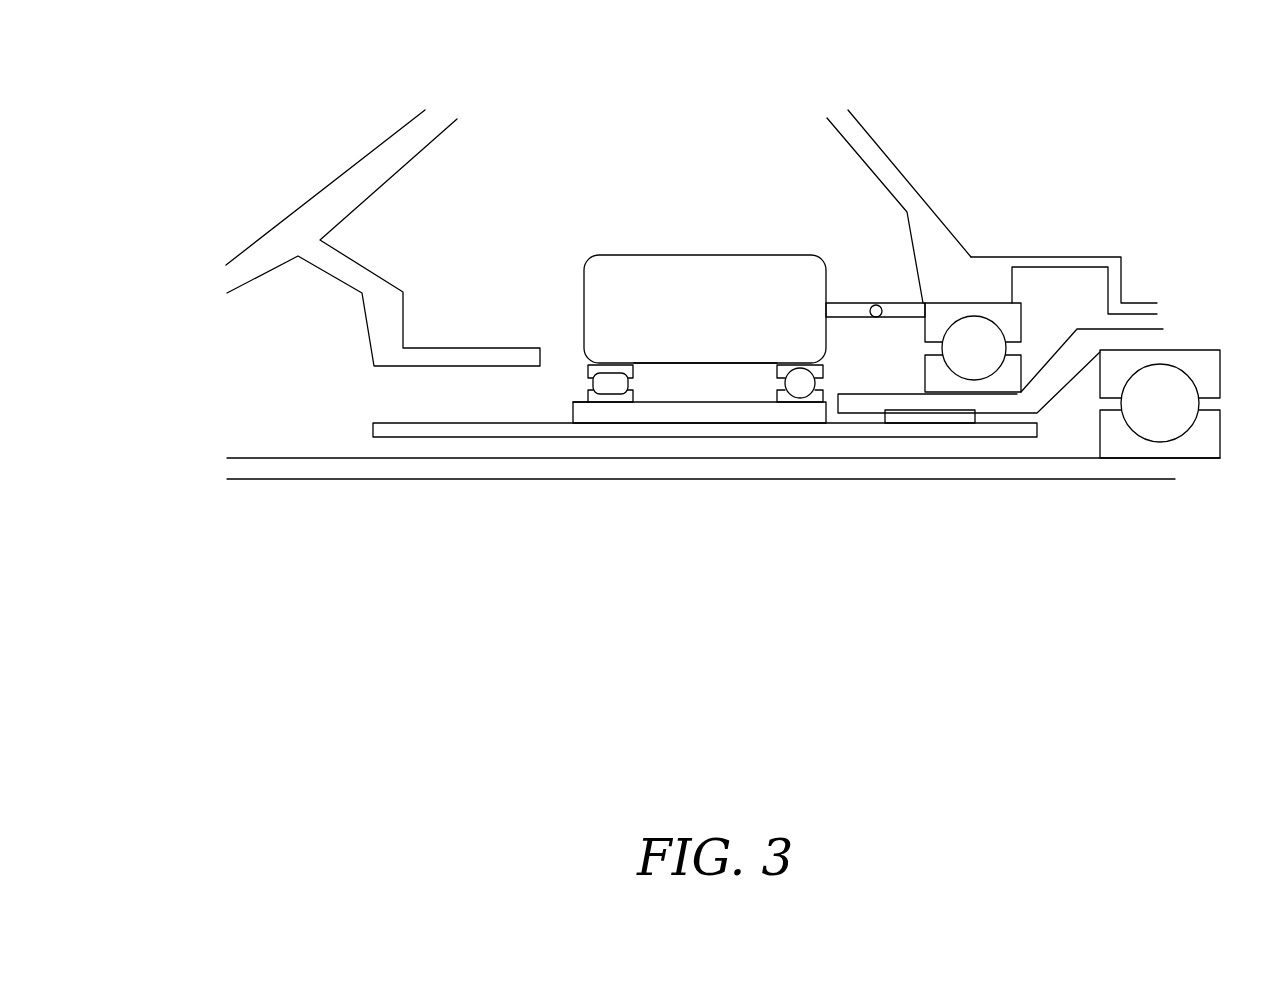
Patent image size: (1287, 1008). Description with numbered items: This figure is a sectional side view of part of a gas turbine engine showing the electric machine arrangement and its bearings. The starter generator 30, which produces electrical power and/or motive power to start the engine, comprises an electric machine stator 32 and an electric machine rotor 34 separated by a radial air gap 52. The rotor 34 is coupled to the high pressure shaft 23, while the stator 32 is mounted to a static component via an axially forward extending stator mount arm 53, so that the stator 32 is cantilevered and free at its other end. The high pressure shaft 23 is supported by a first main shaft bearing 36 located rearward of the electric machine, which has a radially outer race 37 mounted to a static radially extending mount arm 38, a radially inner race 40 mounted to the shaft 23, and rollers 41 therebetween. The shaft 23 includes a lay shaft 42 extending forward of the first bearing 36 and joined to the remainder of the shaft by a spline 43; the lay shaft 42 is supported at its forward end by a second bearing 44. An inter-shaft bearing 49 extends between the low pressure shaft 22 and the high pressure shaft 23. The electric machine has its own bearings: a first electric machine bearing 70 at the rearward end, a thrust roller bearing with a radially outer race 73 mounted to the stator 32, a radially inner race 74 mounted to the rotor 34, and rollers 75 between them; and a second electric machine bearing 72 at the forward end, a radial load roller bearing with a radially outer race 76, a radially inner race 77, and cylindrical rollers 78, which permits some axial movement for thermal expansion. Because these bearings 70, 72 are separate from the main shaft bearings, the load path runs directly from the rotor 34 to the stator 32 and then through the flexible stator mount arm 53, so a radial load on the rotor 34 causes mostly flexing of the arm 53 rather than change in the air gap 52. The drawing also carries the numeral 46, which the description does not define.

The low pressure shaft 22 is at (1082, 479).
The high pressure shaft 23 is at (1075, 353).
The starter generator 30 is at (705, 243).
The electric machine stator 32 is at (778, 255).
The electric machine rotor 34 is at (788, 412).
The first main shaft bearing 36 is at (973, 264).
The radially outer race 37 is at (945, 303).
The radially extending mount arm 38 is at (880, 147).
The radially inner race 40 is at (993, 395).
The rollers 41 is at (1015, 303).
The lay shaft 42 is at (503, 437).
The spline 43 is at (932, 413).
The second bearing 44 is at (435, 445).
The arm 46 is at (365, 319).
The inter-shaft bearing 49 is at (1198, 325).
The radial air gap 52 is at (657, 390).
The stator mount arm 53 is at (898, 303).
The first electric machine bearing 70 is at (771, 363).
The second electric machine bearing 72 is at (588, 281).
The radially outer race 73 is at (775, 378).
The radially inner race 74 is at (773, 392).
The rollers 75 is at (797, 370).
The radially outer race 76 is at (606, 362).
The radially inner race 77 is at (578, 393).
The rollers 78 is at (634, 386).